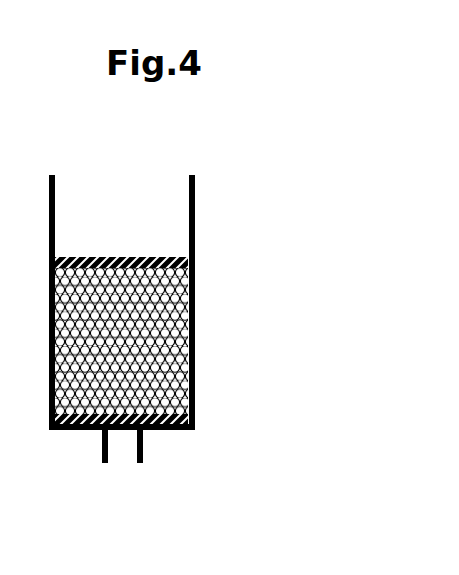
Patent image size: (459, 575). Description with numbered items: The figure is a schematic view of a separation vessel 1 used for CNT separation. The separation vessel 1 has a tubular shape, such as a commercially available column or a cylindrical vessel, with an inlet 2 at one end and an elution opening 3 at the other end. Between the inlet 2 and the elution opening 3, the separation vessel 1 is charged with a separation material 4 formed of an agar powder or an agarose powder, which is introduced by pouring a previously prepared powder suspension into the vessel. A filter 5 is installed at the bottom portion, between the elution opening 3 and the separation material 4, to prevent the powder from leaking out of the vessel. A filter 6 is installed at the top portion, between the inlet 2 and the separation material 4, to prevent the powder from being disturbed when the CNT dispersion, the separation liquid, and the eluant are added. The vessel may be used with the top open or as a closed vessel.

The separation vessel 1 is at (193, 212).
The inlet 2 is at (125, 200).
The elution opening 3 is at (122, 458).
The separation material 4 is at (195, 333).
The filter 5 is at (195, 423).
The filter 6 is at (195, 258).